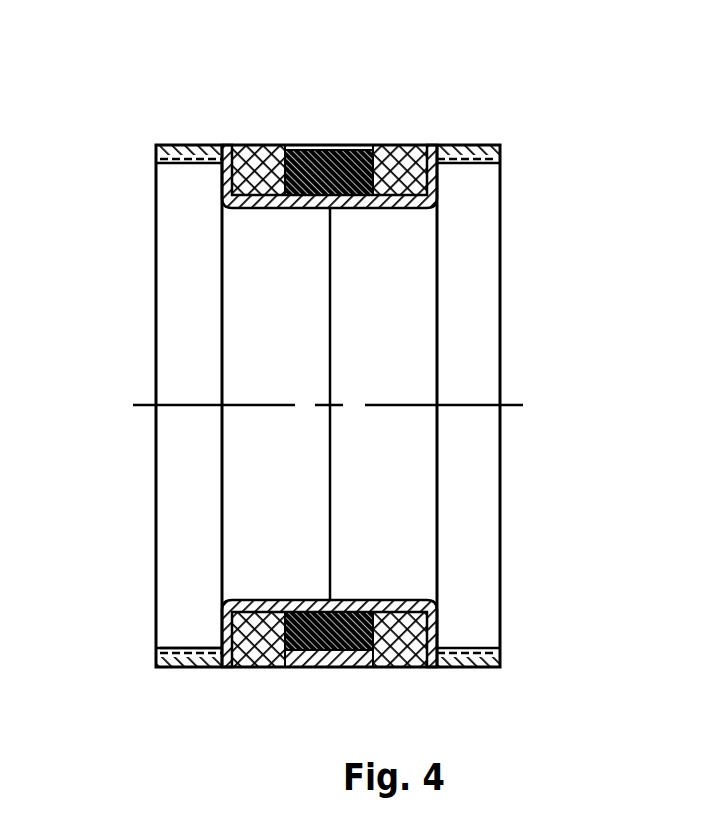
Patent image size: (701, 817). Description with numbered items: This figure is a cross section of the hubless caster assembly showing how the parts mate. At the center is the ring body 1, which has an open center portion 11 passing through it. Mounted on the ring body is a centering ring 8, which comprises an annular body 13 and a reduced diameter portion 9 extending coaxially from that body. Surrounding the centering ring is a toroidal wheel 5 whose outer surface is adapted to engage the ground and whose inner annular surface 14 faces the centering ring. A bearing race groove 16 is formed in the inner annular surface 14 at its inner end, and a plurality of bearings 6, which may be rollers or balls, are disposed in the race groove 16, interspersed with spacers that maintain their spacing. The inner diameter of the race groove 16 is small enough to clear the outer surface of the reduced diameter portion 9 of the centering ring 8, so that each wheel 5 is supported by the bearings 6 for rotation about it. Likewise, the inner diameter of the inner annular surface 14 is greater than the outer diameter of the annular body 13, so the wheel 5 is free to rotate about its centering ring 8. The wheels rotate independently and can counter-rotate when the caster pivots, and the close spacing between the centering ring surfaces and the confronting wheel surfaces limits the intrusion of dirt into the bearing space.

The ring body 1 is at (323, 147).
The toroidal wheel 5 is at (402, 147).
The bearings 6 is at (265, 145).
The centering ring 8 is at (500, 303).
The reduced diameter portion 9 is at (268, 210).
The open center portion 11 is at (403, 347).
The annular body 13 is at (185, 163).
The inner annular surface 14 is at (183, 648).
The bearing race groove 16 is at (268, 667).